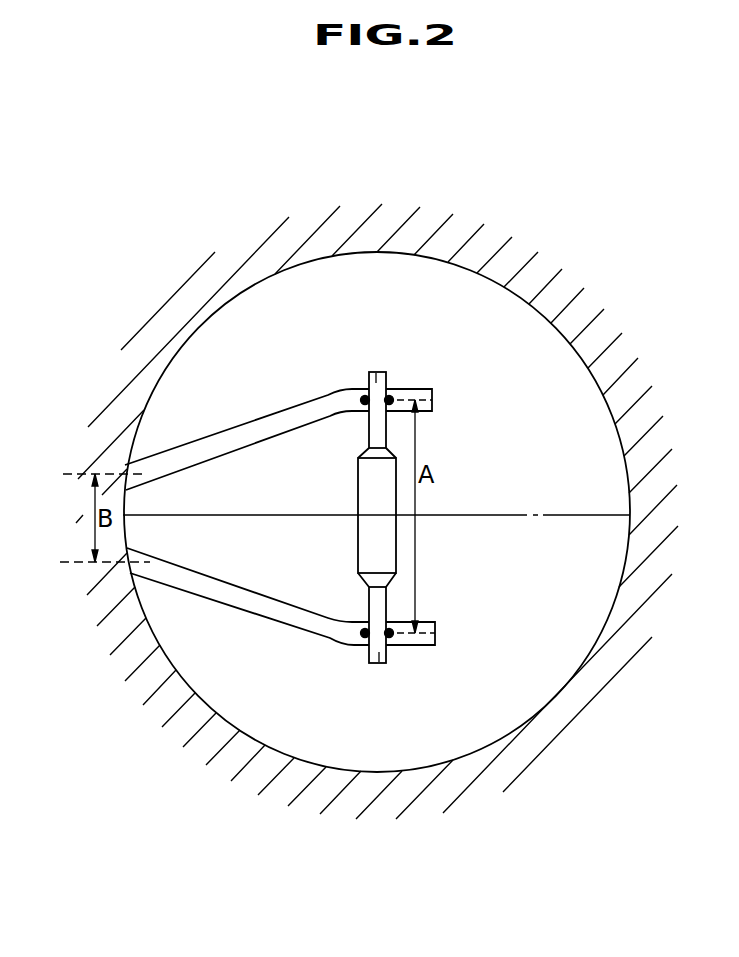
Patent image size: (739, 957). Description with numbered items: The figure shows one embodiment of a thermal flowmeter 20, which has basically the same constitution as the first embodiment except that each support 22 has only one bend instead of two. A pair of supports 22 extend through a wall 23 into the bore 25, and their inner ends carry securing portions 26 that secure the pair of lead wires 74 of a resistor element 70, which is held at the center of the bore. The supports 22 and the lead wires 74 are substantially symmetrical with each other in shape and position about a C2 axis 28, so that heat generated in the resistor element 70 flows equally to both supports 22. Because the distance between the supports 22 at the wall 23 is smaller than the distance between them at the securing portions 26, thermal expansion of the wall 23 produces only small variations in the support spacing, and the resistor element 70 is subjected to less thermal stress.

The thermal flowmeter 20 is at (377, 564).
The support 22 is at (236, 437).
The wall 23 is at (133, 655).
The bore 25 is at (402, 750).
The securing portion 26 is at (363, 396).
The C2 axis 28 is at (553, 515).
The resistor element 70 is at (348, 487).
The lead wire 74 is at (376, 372).